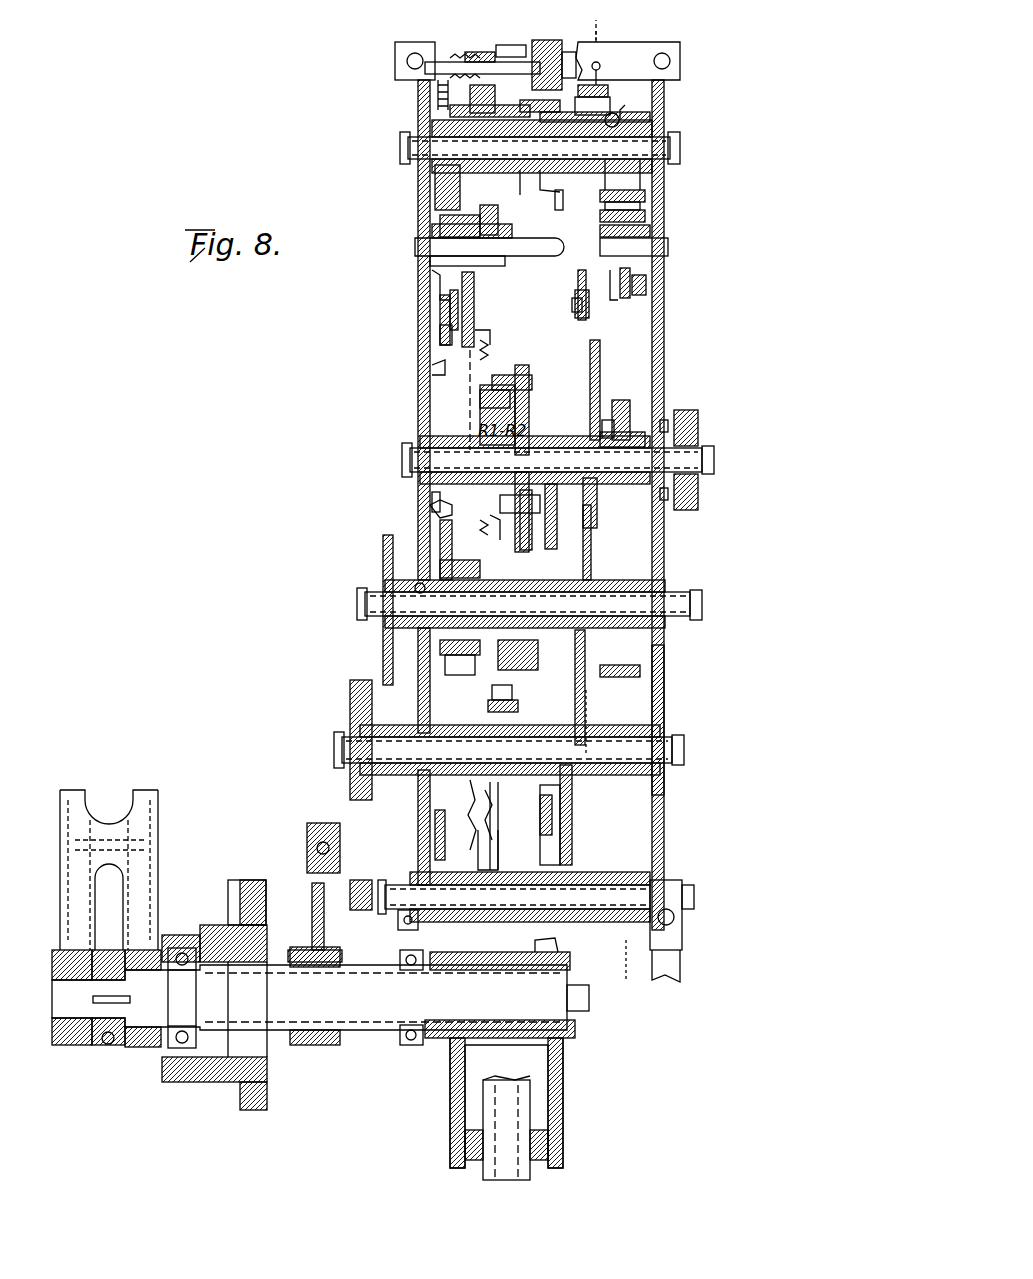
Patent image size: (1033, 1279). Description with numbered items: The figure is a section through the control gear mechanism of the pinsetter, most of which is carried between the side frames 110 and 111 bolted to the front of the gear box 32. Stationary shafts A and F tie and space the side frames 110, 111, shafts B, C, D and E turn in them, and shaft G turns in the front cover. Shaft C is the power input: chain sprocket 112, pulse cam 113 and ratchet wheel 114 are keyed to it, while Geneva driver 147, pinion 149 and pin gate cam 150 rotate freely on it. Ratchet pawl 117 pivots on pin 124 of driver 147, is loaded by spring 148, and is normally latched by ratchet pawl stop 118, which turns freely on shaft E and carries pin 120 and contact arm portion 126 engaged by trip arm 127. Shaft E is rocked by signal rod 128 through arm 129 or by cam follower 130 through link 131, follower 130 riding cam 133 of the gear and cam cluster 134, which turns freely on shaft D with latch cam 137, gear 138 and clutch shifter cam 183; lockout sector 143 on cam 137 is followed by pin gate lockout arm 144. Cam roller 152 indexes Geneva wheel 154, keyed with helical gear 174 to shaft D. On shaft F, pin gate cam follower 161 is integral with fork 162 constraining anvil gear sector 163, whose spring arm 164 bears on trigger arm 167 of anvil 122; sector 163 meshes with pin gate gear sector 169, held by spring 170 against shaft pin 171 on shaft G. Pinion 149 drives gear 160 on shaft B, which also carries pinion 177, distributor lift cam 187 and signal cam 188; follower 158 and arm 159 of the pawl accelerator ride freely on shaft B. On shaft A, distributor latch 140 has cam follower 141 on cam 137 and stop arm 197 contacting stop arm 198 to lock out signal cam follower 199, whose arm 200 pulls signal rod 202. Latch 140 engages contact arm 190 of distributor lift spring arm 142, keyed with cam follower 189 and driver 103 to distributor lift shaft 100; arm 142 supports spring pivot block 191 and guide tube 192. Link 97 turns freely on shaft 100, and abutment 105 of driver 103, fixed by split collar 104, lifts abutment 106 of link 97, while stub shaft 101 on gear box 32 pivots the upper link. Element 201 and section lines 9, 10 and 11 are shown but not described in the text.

The gear box housing 32 is at (410, 204).
The side frame 111 is at (664, 678).
The side frame 110 is at (420, 680).
The signal cam 188 is at (420, 806).
The shaft F is at (640, 150).
The spring 170 is at (455, 62).
The pin gate gear sector 169 is at (505, 45).
The spring arm 164 is at (478, 52).
The shaft pin 171 is at (532, 55).
The shaft G is at (398, 64).
The trigger arm 167 is at (440, 98).
The anvil gear sector 163 is at (480, 112).
The gear sector fork 162 is at (560, 118).
The arm 200 is at (600, 98).
The pin 201 is at (598, 70).
The section line 10 is at (592, 54).
The section line 11 is at (546, 26).
The section line 9 is at (624, 26).
The anvil 122 is at (435, 180).
The contact arm portion 126 is at (440, 220).
The trip arm 127 is at (498, 218).
The pin gate lockout arm 144 is at (560, 188).
The shaft E is at (545, 238).
The link 131 is at (656, 208).
The arm 129 is at (650, 230).
The pin gate cam follower 161 is at (580, 280).
The signal rod 128 is at (632, 272).
The pin 120 is at (430, 262).
The ratchet pawl stop 118 is at (474, 288).
The stub shaft 101 is at (440, 280).
The ratchet pawl 117 is at (452, 360).
The pulse cam 113 is at (440, 368).
The spring 148 is at (500, 322).
The Geneva driver 147 is at (522, 372).
The Geneva wheel 154 is at (530, 380).
The latch cam 137 is at (530, 385).
The gear and cam cluster 134 is at (628, 358).
The cam follower 130 is at (632, 412).
The cam 133 is at (612, 440).
The shaft D is at (670, 462).
The helical gear 174 is at (698, 424).
The clutch shifter cam 183 is at (628, 505).
The signal rod 202 is at (432, 496).
The cam roller 152 is at (540, 505).
The pin gate lockout sector 143 is at (540, 555).
The gear 138 is at (598, 540).
The pin gate cam 150 is at (592, 558).
The ratchet wheel 114 is at (450, 565).
The chain sprocket 112 is at (400, 576).
The shaft C is at (660, 610).
The pinion 149 is at (570, 580).
The pin 124 is at (465, 676).
The follower 158 is at (500, 724).
The gear 160 is at (578, 730).
The pinion 177 is at (592, 740).
The shaft B is at (640, 752).
The distributor lift cam 187 is at (352, 788).
The stop arm 198 is at (488, 804).
The arm 159 is at (500, 816).
The stop arm 197 is at (500, 848).
The cam follower 141 is at (556, 812).
The distributor latch 140 is at (562, 840).
The signal cam follower 199 is at (440, 858).
The shaft A is at (640, 890).
The contact arm 190 is at (560, 946).
The distributor lift cam follower 189 is at (320, 900).
The distributor lift shaft 100 is at (320, 997).
The link 97 is at (110, 800).
The split collar 104 is at (100, 1046).
The abutment 105 is at (160, 818).
The abutment 106 is at (130, 855).
The driver 103 is at (110, 887).
The distributor lift spring arm 142 is at (545, 1055).
The tube 192 is at (505, 1108).
The spring pivot block 191 is at (552, 1125).